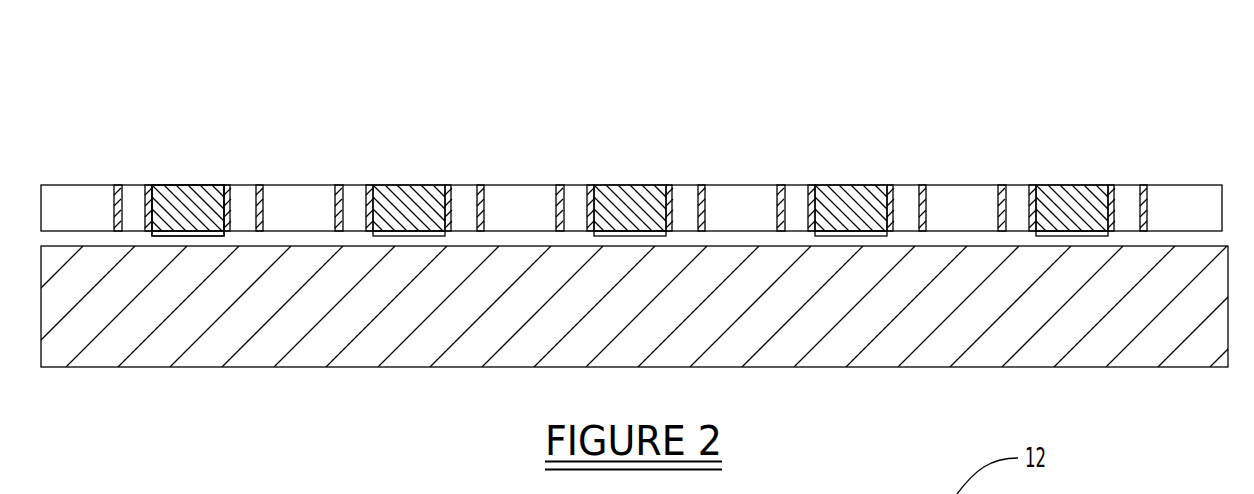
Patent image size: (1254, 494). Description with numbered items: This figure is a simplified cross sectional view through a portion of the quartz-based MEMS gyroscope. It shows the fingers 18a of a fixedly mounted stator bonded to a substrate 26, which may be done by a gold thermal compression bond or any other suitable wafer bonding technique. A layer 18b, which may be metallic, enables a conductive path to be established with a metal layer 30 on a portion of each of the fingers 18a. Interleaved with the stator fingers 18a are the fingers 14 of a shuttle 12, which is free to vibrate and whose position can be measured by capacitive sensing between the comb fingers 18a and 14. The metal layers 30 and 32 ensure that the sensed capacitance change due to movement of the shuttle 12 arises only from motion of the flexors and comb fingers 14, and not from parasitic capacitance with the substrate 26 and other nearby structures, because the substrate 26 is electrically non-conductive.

The shuttle 12 is at (174, 160).
The fingers 14 is at (58, 193).
The fingers 18a is at (190, 191).
The layer 18b is at (170, 239).
The substrate 26 is at (300, 350).
The metal layer 30 is at (150, 188).
The metal layer 32 is at (117, 187).